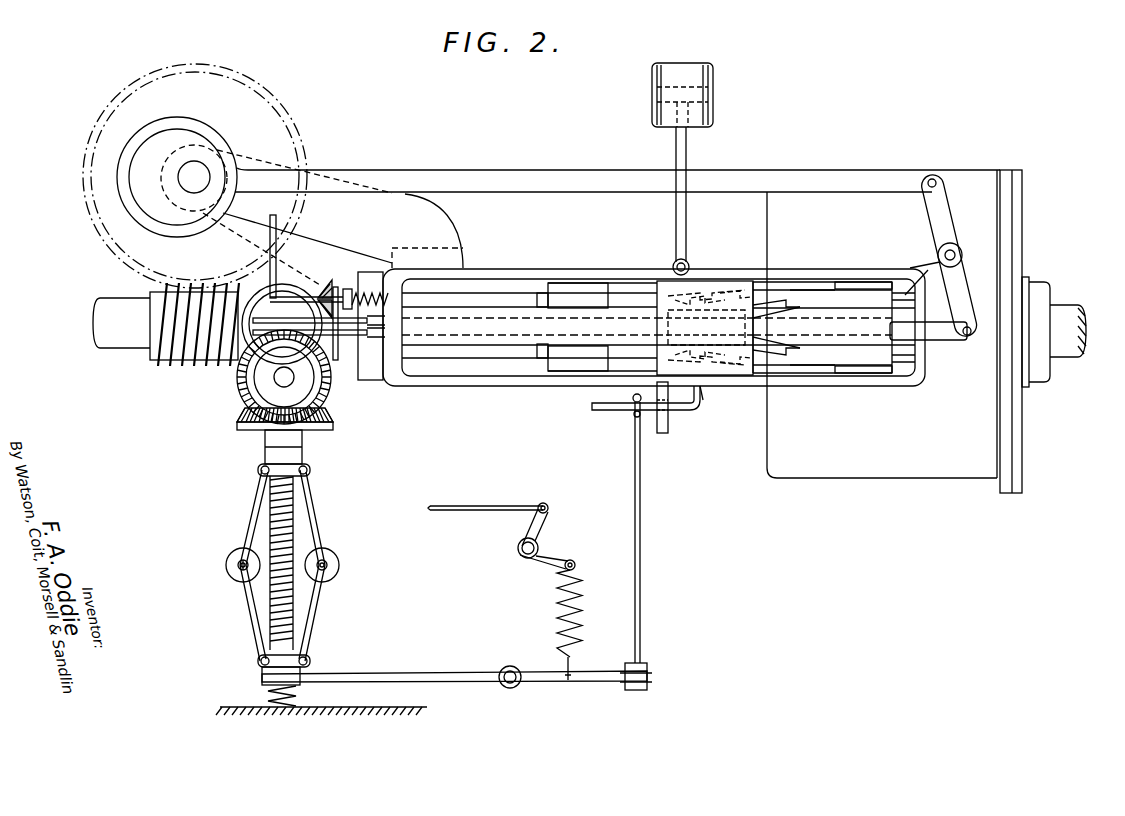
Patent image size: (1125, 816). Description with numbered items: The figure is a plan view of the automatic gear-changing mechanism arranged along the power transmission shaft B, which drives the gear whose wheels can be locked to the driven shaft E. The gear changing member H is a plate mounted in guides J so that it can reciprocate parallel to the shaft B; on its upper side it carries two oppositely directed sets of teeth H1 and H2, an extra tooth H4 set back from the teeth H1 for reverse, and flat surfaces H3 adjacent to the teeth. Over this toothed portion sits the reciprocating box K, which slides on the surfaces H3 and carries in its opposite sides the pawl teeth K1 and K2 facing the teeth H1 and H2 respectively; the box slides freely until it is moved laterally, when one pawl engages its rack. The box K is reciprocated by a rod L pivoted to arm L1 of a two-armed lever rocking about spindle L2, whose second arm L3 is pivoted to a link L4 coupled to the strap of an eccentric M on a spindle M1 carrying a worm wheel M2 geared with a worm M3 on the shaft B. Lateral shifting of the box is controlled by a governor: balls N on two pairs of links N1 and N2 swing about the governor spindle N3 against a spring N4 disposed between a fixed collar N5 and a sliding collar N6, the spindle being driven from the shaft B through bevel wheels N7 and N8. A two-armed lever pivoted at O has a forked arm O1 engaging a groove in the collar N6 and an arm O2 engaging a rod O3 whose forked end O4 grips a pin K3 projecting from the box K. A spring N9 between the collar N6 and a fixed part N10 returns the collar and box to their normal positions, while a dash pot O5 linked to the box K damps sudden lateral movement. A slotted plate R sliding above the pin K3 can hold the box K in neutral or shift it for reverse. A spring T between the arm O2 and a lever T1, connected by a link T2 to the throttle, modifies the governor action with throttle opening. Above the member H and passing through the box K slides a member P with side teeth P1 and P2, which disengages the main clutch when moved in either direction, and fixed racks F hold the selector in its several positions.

The eccentric M is at (220, 138).
The spindle M1 is at (194, 168).
The worm wheel M2 is at (298, 137).
The worm M3 is at (190, 365).
The power transmission shaft B is at (120, 335).
The balls N is at (225, 565).
The links N1 is at (252, 518).
The links N2 is at (257, 642).
The governor spindle N3 is at (280, 618).
The spring N4 is at (292, 583).
The collar N5 is at (305, 455).
The collar N6 is at (312, 660).
The bevel wheel N7 is at (325, 415).
The bevel wheel N8 is at (322, 285).
The spring N9 is at (268, 695).
The fixed part N10 is at (393, 707).
The pivot O is at (512, 667).
The lever arm O1 is at (457, 673).
The lever arm O2 is at (602, 672).
The rod O3 is at (640, 612).
The fork O4 is at (635, 417).
The dash pot O5 is at (714, 81).
The plate R is at (641, 462).
The spring T is at (558, 605).
The lever T1 is at (545, 523).
The link T2 is at (500, 506).
The fixed racks F is at (525, 300).
The sliding member P is at (492, 300).
The tooth P1 is at (678, 360).
The tooth P2 is at (670, 295).
The box K is at (650, 275).
The pawl tooth K1 is at (710, 398).
The pawl tooth K2 is at (718, 290).
The pin K3 is at (592, 408).
The gear changing member H is at (868, 345).
The teeth H1 is at (800, 360).
The teeth H2 is at (770, 302).
The flat surfaces H3 is at (852, 295).
The extra tooth H4 is at (640, 353).
The guides J is at (813, 285).
The rod L is at (938, 345).
The lever arm L1 is at (960, 285).
The spindle L2 is at (962, 250).
The lever arm L3 is at (937, 207).
The link L4 is at (865, 178).
The driven shaft E is at (1065, 348).